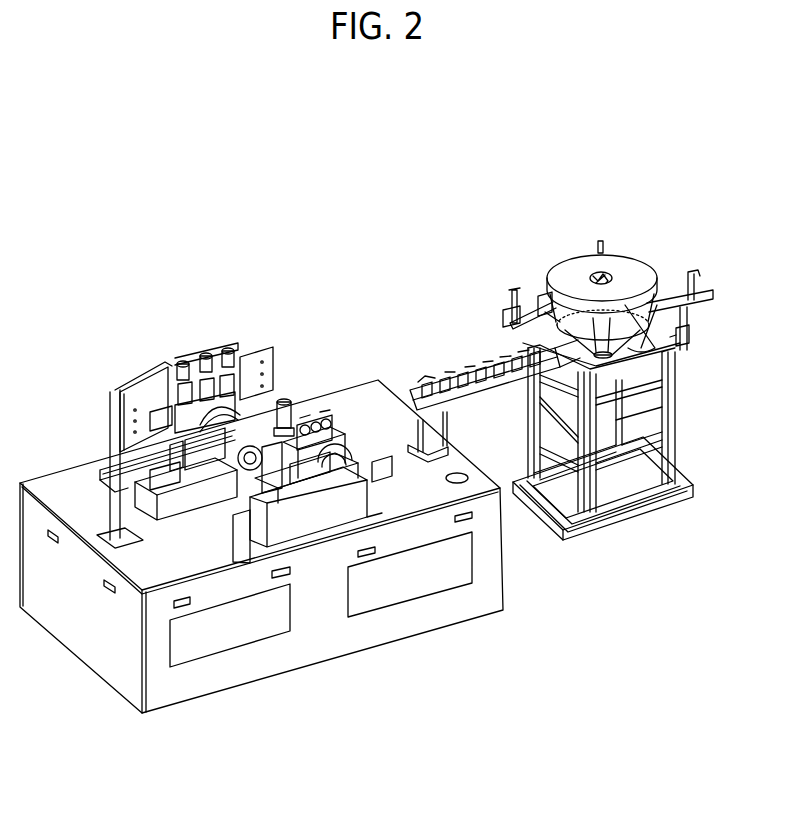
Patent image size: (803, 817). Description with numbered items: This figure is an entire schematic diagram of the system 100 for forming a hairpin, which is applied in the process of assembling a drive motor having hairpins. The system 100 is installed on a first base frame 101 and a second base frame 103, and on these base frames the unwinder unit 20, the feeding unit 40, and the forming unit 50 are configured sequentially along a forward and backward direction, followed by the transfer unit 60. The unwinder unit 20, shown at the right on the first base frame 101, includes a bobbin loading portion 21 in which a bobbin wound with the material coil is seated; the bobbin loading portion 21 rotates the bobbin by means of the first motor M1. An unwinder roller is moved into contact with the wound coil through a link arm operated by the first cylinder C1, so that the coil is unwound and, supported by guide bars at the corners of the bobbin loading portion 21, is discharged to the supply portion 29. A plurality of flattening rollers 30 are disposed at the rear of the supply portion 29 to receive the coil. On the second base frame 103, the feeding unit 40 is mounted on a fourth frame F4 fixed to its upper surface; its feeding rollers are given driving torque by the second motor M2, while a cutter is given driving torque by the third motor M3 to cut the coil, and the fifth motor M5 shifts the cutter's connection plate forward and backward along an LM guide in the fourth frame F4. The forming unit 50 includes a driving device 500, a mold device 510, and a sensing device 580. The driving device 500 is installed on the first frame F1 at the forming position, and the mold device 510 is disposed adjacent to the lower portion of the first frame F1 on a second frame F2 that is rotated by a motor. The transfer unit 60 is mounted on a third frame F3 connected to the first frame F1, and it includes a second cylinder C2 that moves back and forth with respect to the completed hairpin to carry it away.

The system for forming a hairpin 100 is at (147, 194).
The second base frame 103 is at (63, 637).
The first base frame 101 is at (623, 520).
The first motor M1 is at (670, 383).
The unwinder unit 20 is at (573, 243).
The bobbin loading portion 21 is at (606, 276).
The supply portion 29 is at (690, 338).
The first cylinder C1 is at (550, 307).
The flattening rollers 30 is at (478, 367).
The driving device 500 is at (157, 393).
The mold device 510 is at (120, 376).
The sensing device 580 is at (115, 487).
The forming unit 50 is at (212, 345).
The first frame F1 is at (253, 357).
The second motor M2 is at (287, 395).
The third motor M3 is at (310, 417).
The transfer unit 60 is at (254, 547).
The feeding unit 40 is at (348, 511).
The fifth motor M5 is at (372, 467).
The second frame F2 is at (150, 545).
The third frame F3 is at (190, 470).
The second cylinder C2 is at (225, 480).
The fourth frame F4 is at (307, 523).